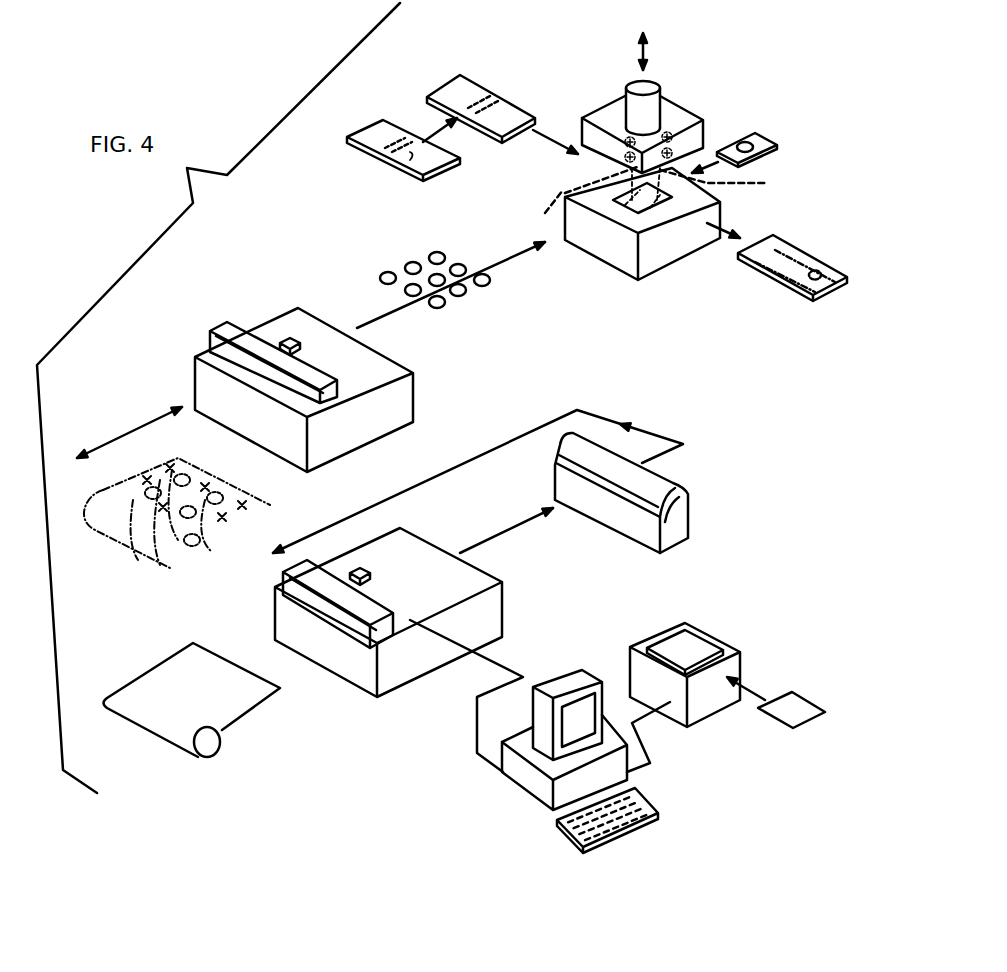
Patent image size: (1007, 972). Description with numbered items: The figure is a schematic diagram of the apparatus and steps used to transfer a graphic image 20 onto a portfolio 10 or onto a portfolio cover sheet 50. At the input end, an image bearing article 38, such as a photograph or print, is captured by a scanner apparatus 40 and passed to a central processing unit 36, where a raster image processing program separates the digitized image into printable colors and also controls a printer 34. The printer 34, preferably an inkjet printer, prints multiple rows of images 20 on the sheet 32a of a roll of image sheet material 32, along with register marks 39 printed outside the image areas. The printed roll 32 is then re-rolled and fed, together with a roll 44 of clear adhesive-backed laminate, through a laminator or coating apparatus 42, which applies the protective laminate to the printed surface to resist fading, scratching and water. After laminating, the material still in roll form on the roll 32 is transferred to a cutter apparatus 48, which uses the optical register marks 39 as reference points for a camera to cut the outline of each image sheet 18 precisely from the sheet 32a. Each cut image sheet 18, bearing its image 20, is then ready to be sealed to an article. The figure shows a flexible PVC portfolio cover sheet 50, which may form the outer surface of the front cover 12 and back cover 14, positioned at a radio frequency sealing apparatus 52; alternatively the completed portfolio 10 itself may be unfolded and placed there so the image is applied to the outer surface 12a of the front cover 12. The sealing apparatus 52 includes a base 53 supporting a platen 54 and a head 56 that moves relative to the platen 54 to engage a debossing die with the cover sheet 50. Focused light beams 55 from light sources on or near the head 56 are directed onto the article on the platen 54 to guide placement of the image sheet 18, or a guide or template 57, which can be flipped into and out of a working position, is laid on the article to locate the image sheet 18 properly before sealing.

The portfolio 10 is at (345, 133).
The front cover 12 is at (440, 172).
The outer surface of front cover 12a is at (418, 156).
The back cover 14 is at (378, 156).
The image sheet 18 is at (822, 270).
The graphic image 20 is at (166, 443).
The roll of image sheet material 32 is at (83, 535).
The sheet of image sheet material 32a is at (128, 437).
The printer 34 is at (405, 690).
The central processing unit 36 is at (547, 788).
The image bearing article 38 is at (787, 726).
The register marks 39 is at (203, 472).
The scanner apparatus 40 is at (712, 642).
The laminator or coating apparatus 42 is at (693, 525).
The roll of laminate sheet 44 is at (673, 480).
The cutter apparatus 48 is at (328, 312).
The portfolio cover sheet 50 is at (537, 55).
The RF sealing apparatus 52 is at (745, 106).
The base 53 is at (617, 240).
The platen 54 is at (652, 203).
The focused light beams 55 is at (654, 197).
The head 56 is at (683, 109).
The guide or template 57 is at (767, 138).